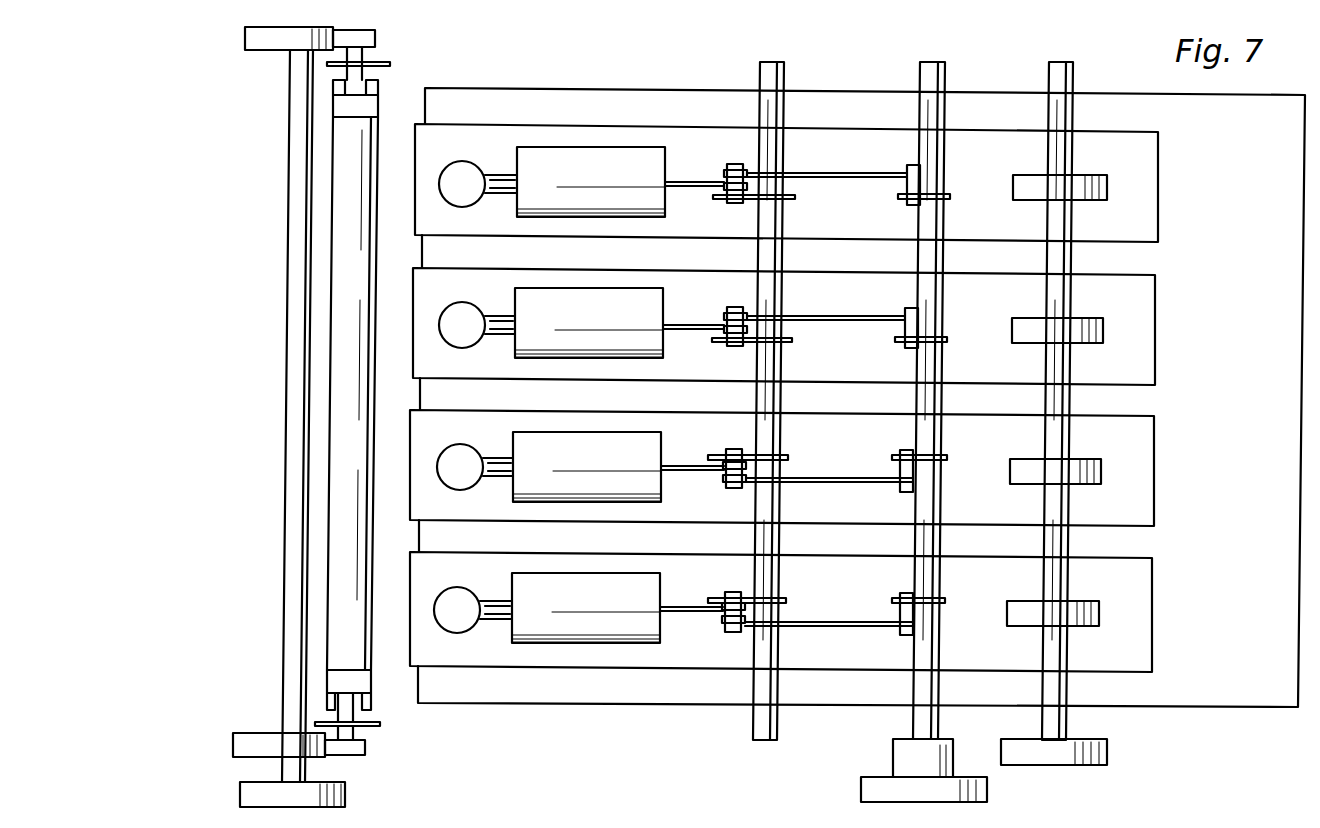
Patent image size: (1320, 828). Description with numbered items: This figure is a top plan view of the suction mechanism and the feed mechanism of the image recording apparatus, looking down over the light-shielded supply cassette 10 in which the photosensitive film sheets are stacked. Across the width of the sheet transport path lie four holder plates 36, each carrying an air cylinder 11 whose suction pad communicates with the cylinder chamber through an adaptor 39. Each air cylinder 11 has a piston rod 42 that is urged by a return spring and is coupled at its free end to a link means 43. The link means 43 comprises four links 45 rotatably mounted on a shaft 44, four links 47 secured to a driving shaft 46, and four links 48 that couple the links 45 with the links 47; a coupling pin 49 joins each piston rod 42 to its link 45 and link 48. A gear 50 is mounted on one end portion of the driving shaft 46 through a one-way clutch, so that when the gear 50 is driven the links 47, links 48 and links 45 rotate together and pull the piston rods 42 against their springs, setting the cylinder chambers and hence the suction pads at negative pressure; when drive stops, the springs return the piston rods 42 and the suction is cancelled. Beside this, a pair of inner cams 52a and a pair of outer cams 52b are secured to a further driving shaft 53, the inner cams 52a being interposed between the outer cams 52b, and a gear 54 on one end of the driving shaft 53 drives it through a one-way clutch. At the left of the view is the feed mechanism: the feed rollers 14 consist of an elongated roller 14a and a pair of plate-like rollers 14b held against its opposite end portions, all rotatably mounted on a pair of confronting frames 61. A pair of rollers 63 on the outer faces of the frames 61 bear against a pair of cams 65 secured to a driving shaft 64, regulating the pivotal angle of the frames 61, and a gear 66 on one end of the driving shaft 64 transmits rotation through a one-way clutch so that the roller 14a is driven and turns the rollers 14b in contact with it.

The supply cassette 10 is at (683, 100).
The air cylinder 11 is at (556, 160).
The feed rollers 14 is at (326, 104).
The elongated roller 14a is at (345, 182).
The plate-like rollers 14b is at (350, 107).
The holder plate 36 is at (612, 135).
The adaptor 39 is at (465, 168).
The piston rod 42 is at (688, 188).
The link means 43 is at (846, 150).
The shaft 44 is at (772, 70).
The link 45 is at (793, 195).
The driving shaft 46 is at (935, 72).
The link 47 is at (880, 199).
The link 48 is at (848, 178).
The coupling pin 49 is at (735, 166).
The gear 50 is at (865, 790).
The inner cams 52a is at (1103, 320).
The outer cams 52b is at (1107, 188).
The driving shaft 53 is at (1063, 72).
The gear 54 is at (1060, 765).
The frames 61 is at (327, 64).
The rollers 63 is at (370, 42).
The driving shaft 64 is at (292, 370).
The cams 65 is at (265, 42).
The gear 66 is at (250, 790).